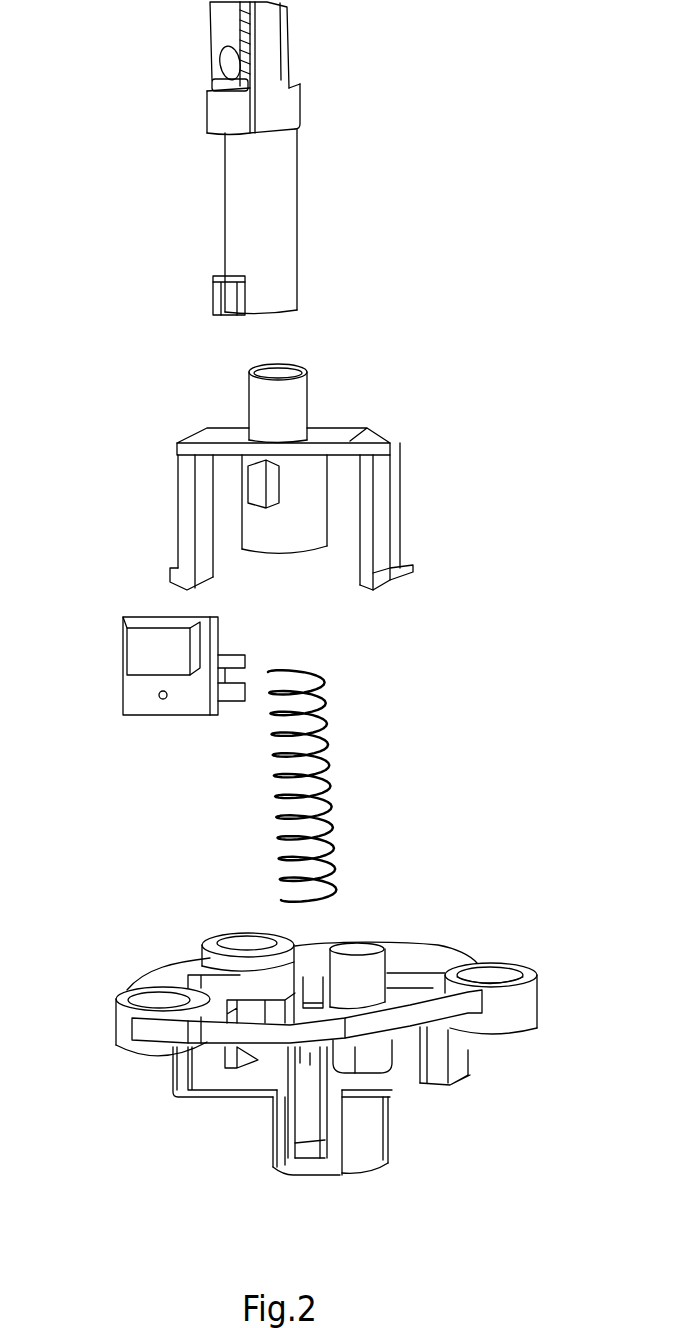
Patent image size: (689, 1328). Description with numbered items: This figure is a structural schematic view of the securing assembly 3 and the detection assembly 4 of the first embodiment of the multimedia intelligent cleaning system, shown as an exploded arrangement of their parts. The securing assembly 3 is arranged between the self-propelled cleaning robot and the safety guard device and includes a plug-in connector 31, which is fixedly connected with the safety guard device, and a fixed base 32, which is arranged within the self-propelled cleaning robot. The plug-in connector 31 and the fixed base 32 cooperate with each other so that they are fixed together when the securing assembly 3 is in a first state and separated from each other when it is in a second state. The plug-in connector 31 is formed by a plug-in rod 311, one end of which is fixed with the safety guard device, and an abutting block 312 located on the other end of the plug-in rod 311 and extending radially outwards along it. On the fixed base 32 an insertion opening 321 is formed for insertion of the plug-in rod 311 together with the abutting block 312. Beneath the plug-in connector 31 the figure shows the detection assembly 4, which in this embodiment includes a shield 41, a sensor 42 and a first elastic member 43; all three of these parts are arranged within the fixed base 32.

The securing assembly 3 is at (334, 1019).
The plug-in connector 31 is at (261, 158).
The plug-in rod 311 is at (273, 250).
The abutting block 312 is at (217, 283).
The fixed base 32 is at (412, 1080).
The insertion opening 321 is at (237, 980).
The detection assembly 4 is at (223, 623).
The shield 41 is at (297, 428).
The sensor 42 is at (137, 693).
The first elastic member 43 is at (313, 837).